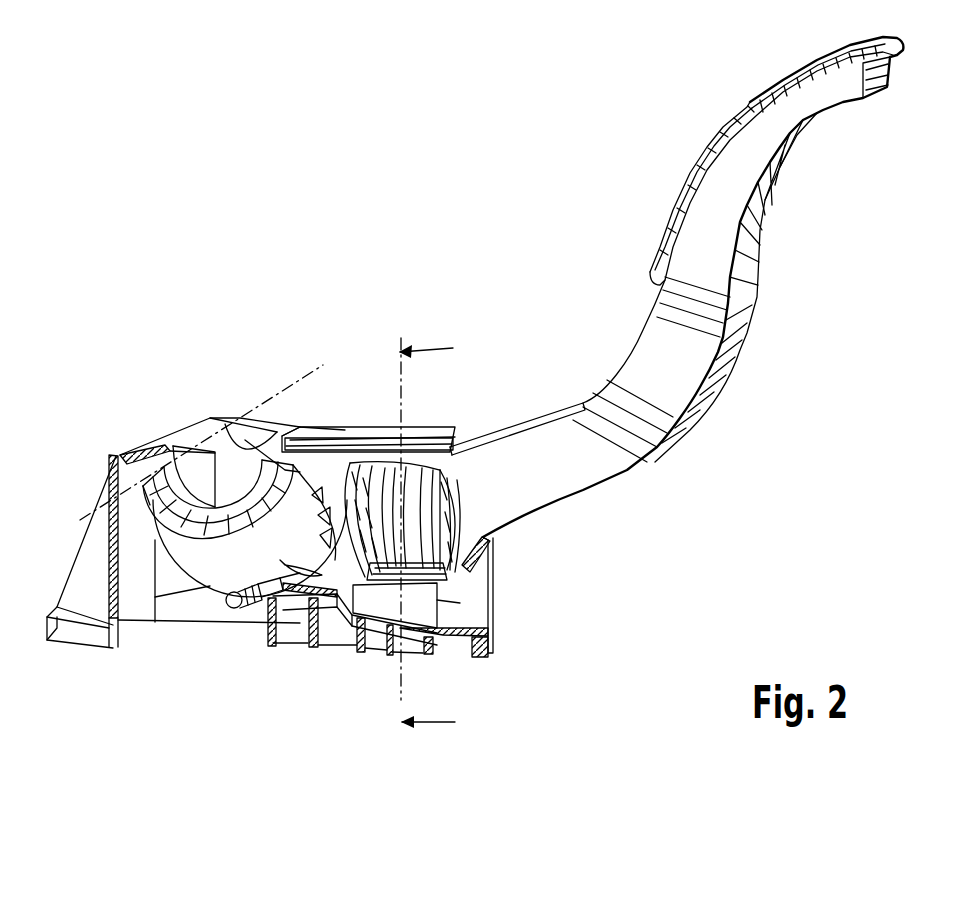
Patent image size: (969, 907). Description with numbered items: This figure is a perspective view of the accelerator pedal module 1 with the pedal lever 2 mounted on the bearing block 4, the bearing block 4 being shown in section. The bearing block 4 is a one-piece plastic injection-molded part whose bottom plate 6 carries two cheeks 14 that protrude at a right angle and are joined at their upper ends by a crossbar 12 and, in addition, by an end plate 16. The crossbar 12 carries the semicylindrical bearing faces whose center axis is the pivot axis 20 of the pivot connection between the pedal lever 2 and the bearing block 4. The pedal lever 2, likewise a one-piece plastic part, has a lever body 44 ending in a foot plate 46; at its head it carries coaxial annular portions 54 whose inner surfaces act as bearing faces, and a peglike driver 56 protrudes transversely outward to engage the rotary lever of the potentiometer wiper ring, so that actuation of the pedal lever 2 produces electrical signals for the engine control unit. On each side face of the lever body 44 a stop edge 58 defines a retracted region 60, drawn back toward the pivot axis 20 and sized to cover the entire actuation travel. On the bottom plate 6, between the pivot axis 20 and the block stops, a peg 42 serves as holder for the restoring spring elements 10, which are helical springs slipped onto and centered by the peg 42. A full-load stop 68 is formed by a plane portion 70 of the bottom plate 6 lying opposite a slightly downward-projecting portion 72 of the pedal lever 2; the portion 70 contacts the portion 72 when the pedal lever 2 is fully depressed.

The accelerator pedal module 1 is at (302, 252).
The pedal lever 2 is at (578, 492).
The bearing block 4 is at (170, 420).
The bottom plate 6 is at (485, 655).
The restoring spring elements 10 is at (303, 598).
The crossbar 12 is at (231, 425).
The cheeks 14 is at (497, 600).
The end plate 16 is at (109, 542).
The pivot axis 20 is at (323, 366).
The peg 42 is at (317, 600).
The lever body 44 is at (512, 455).
The foot plate 46 is at (712, 140).
The annular portions 54 is at (340, 437).
The driver 56 is at (230, 606).
The stop edge 58 is at (393, 573).
The retracted region 60 is at (415, 463).
The full-load stop 68 is at (446, 608).
The plane portion 70 is at (437, 655).
The portion 72 is at (470, 575).